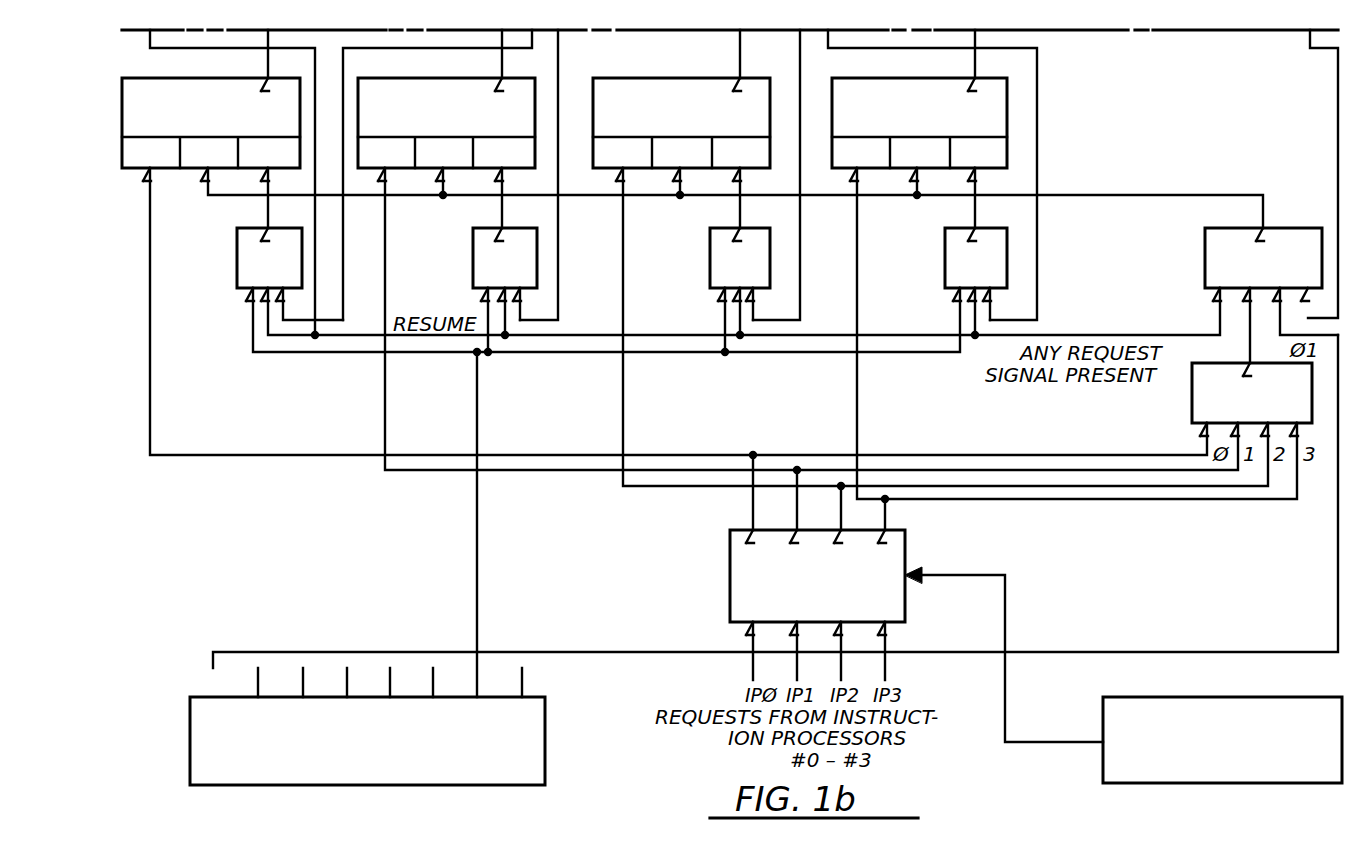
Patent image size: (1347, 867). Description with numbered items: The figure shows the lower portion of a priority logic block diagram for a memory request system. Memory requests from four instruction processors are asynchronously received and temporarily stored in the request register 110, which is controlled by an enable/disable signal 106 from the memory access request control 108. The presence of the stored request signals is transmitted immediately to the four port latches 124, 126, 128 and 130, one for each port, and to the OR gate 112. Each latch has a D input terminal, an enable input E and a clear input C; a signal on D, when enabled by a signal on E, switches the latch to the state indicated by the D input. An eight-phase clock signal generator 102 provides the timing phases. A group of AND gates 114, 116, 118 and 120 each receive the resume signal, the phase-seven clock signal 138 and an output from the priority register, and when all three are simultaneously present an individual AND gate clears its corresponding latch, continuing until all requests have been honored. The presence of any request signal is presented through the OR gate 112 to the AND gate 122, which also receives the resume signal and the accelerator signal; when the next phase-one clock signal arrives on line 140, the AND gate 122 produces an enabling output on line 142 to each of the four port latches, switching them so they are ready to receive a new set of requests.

The clock signal generator 102 is at (546, 753).
The enable/disable signal line 106 is at (947, 578).
The memory access request control 108 is at (1176, 697).
The request register 110 is at (728, 592).
The OR gate 112 is at (1190, 404).
The AND gate 114 is at (262, 226).
The AND gate 116 is at (493, 226).
The AND gate 118 is at (727, 226).
The AND gate 120 is at (967, 226).
The AND gate 122 is at (1248, 227).
The port 0 latch 124 is at (219, 76).
The port 1 latch 126 is at (446, 76).
The port 2 latch 128 is at (674, 76).
The port 3 latch 130 is at (914, 76).
The phase seven clock signal 138 is at (486, 402).
The phase one clock line 140 is at (1333, 591).
The enabling signal line 142 is at (1172, 194).